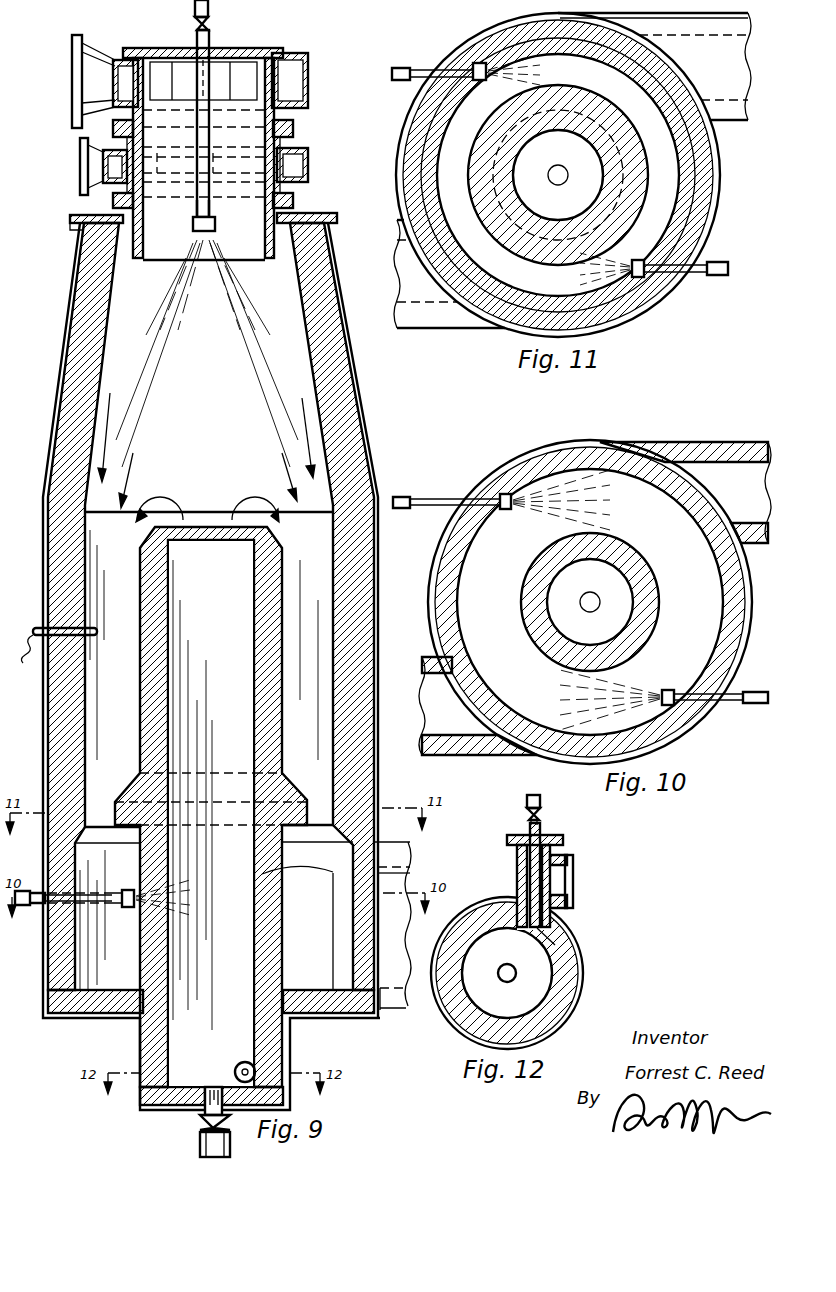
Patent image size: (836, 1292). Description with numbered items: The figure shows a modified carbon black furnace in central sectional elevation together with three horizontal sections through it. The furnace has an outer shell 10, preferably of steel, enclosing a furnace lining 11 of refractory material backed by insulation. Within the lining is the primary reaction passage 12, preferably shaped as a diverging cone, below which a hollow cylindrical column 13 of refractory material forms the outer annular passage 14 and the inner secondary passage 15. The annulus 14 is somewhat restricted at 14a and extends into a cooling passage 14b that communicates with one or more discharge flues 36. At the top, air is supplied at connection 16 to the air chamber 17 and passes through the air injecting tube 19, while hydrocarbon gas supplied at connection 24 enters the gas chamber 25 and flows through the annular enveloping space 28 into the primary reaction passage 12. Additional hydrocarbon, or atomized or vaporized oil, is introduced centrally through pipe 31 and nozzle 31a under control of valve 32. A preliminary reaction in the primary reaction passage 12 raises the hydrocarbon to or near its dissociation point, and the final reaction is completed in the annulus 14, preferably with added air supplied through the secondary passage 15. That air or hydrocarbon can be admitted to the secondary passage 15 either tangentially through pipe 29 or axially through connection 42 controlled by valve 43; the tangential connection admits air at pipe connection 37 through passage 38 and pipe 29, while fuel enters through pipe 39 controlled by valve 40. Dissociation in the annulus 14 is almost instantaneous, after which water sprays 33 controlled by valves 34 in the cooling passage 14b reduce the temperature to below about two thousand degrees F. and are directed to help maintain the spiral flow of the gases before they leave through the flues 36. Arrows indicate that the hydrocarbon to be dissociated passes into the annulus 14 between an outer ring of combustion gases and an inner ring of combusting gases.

In FIG. 9, the outer shell 10 is at (60, 408).
In FIG. 9, the furnace lining 11 is at (87, 382).
In FIG. 9, the primary reaction passage 12 is at (290, 360).
In FIG. 9, the hollow cylindrical column 13 is at (152, 608).
In FIG. 9, the annular passage 14 is at (315, 682).
In FIG. 9, the restriction 14a is at (322, 808).
In FIG. 9, the cooling passage 14b is at (333, 850).
In FIG. 9, the secondary passage 15 is at (233, 625).
In FIG. 12, the secondary passage 15 is at (528, 960).
In FIG. 9, the air connection 16 is at (72, 63).
In FIG. 9, the air chamber 17 is at (283, 78).
In FIG. 9, the air injecting tube 19 is at (277, 257).
In FIG. 9, the gas connection 24 is at (80, 155).
In FIG. 9, the gas chamber 25 is at (290, 165).
In FIG. 9, the annular enveloping space 28 is at (280, 250).
In FIG. 9, the supply pipe 29 is at (253, 1067).
In FIG. 12, the supply pipe 29 is at (538, 932).
In FIG. 9, the supply pipe 31 is at (210, 205).
In FIG. 9, the nozzle 31a is at (213, 230).
In FIG. 9, the valve 32 is at (203, 22).
In FIG. 9, the water spray 33 is at (127, 907).
In FIG. 10, the water spray 33 is at (505, 510).
In FIG. 9, the valve 34 is at (37, 903).
In FIG. 10, the valve 34 is at (400, 497).
In FIG. 10, the discharge flue 36 is at (712, 482).
In FIG. 12, the pipe connection 37 is at (573, 870).
In FIG. 9, the passage 38 is at (52, 659).
In FIG. 12, the passage 38 is at (530, 878).
In FIG. 12, the fuel pipe 39 is at (518, 857).
In FIG. 12, the valve 40 is at (541, 812).
In FIG. 9, the axial connection 42 is at (213, 1110).
In FIG. 12, the axial connection 42 is at (510, 973).
In FIG. 9, the valve 43 is at (207, 1127).